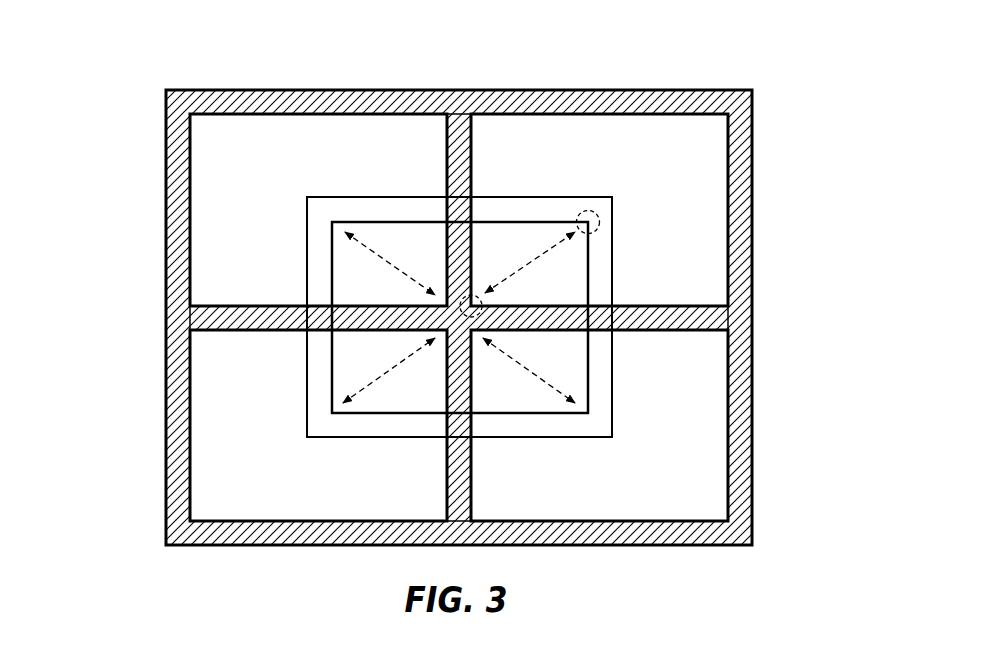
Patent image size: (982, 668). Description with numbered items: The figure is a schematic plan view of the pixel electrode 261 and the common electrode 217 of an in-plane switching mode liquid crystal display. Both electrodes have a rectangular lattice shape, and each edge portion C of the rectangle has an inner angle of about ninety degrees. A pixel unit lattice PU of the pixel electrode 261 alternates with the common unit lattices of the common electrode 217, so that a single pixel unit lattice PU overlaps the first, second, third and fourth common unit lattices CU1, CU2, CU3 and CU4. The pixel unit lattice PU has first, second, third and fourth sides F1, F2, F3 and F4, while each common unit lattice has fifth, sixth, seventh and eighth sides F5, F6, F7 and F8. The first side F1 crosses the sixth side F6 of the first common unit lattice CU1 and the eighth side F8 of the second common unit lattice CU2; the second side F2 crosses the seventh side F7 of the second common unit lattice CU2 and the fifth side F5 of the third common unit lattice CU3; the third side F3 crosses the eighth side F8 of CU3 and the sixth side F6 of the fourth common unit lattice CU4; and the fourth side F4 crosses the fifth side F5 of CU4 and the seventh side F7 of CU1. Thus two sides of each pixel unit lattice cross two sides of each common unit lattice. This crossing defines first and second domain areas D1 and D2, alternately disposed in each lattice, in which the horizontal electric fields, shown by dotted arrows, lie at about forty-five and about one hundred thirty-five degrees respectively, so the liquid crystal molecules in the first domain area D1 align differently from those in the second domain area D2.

The common electrode 217 is at (540, 92).
The pixel electrode 261 is at (530, 207).
The pixel unit lattice PU is at (600, 187).
The first common unit lattice CU1 is at (150, 216).
The second common unit lattice CU2 is at (772, 216).
The third common unit lattice CU3 is at (772, 446).
The fourth common unit lattice CU4 is at (150, 446).
The first side F1 is at (378, 207).
The second side F2 is at (605, 252).
The third side F3 is at (528, 428).
The fourth side F4 is at (315, 383).
The fifth side F5 is at (295, 90).
The sixth side F6 is at (452, 148).
The seventh side F7 is at (250, 310).
The eighth side F8 is at (178, 213).
The edge portion C is at (600, 216).
The first domain area D1 is at (459, 317).
The second domain area D2 is at (460, 317).